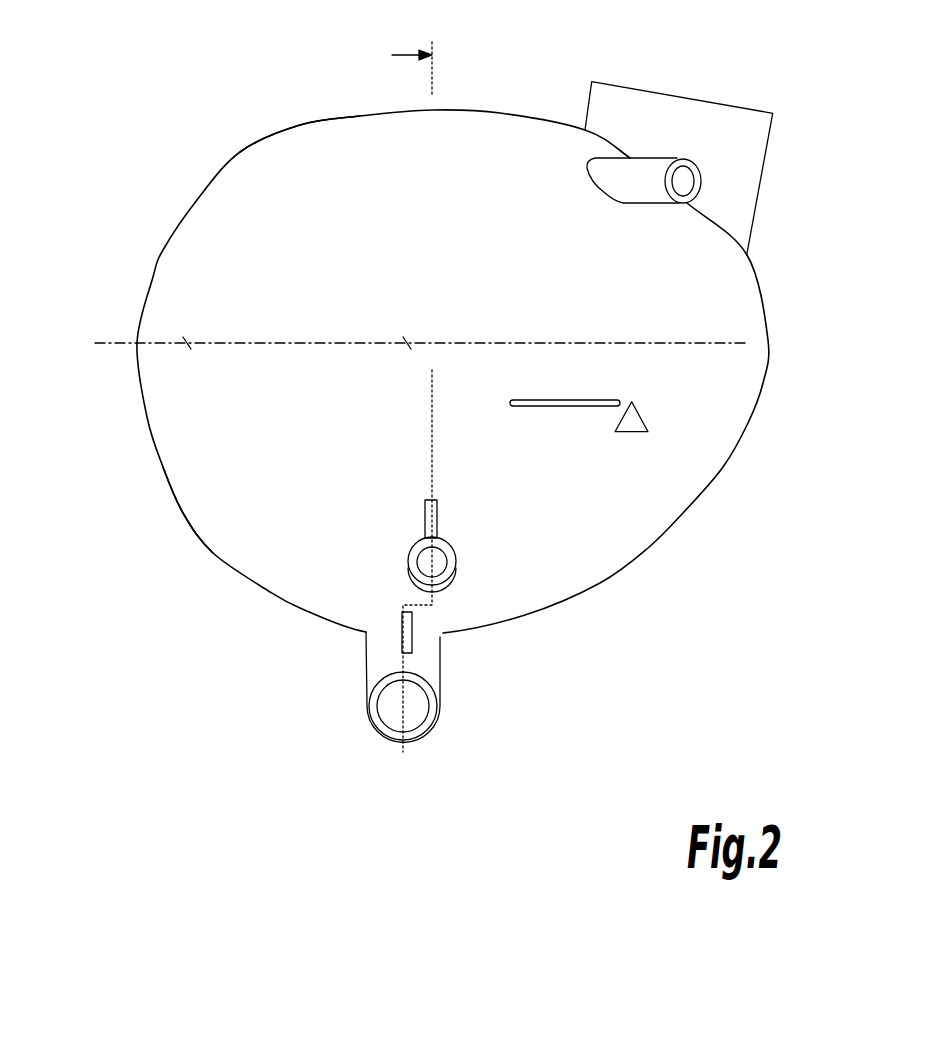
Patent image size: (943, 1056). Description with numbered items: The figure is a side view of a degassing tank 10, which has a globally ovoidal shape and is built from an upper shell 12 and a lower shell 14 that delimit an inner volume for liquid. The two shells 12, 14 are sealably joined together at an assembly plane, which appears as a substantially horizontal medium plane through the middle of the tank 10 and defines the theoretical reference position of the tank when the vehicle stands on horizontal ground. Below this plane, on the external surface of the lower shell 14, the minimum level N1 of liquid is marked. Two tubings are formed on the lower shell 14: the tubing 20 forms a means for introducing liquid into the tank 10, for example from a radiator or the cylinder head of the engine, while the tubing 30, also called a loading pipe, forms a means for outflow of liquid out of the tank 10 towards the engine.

The degassing tank 10 is at (405, 380).
The upper shell 12 is at (246, 156).
The lower shell 14 is at (173, 517).
The tubing 20 is at (494, 581).
The tubing 30 is at (450, 677).
The minimum level N1 is at (657, 425).